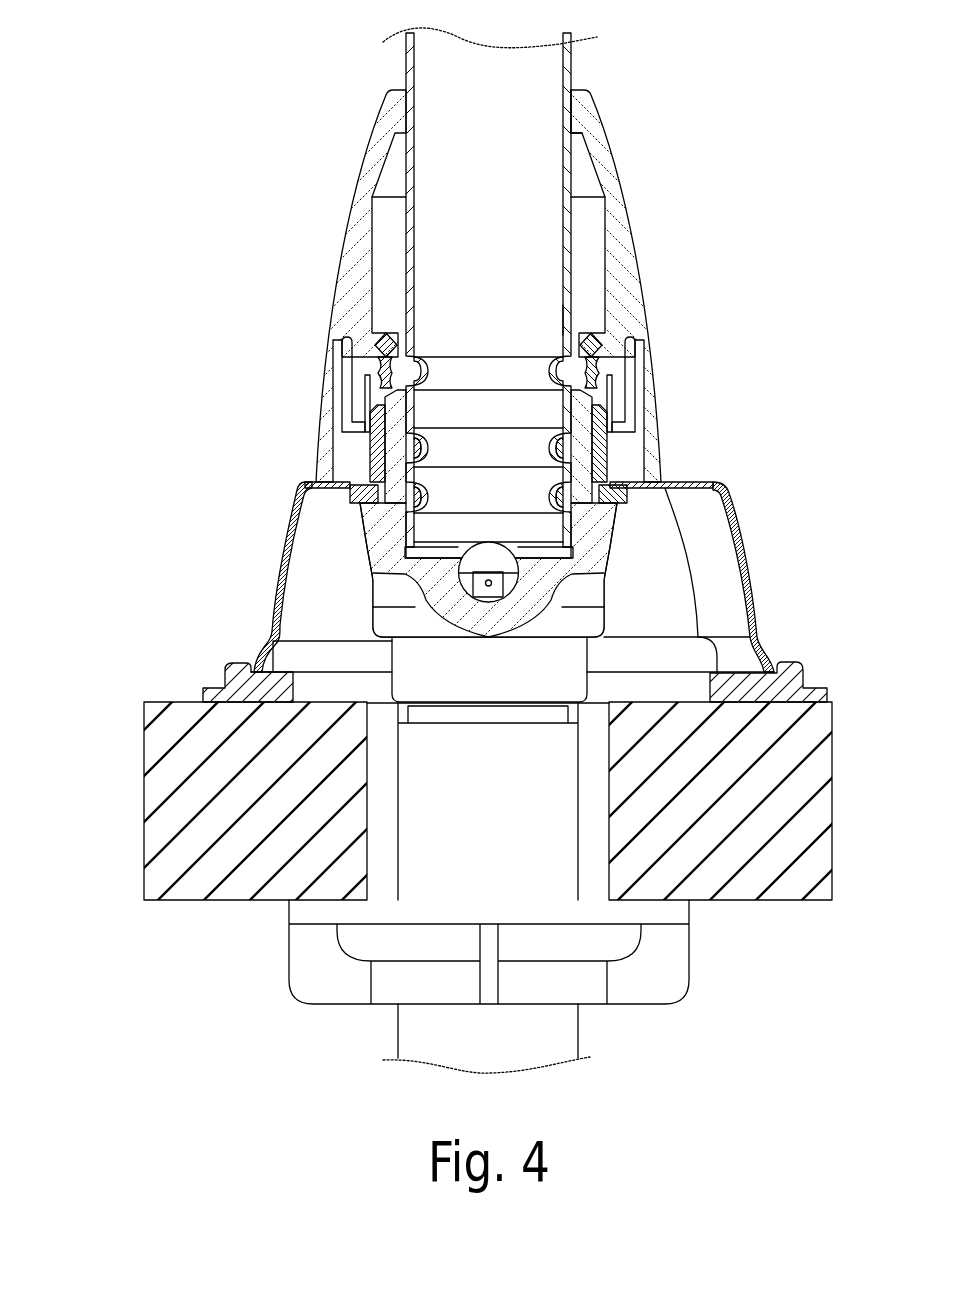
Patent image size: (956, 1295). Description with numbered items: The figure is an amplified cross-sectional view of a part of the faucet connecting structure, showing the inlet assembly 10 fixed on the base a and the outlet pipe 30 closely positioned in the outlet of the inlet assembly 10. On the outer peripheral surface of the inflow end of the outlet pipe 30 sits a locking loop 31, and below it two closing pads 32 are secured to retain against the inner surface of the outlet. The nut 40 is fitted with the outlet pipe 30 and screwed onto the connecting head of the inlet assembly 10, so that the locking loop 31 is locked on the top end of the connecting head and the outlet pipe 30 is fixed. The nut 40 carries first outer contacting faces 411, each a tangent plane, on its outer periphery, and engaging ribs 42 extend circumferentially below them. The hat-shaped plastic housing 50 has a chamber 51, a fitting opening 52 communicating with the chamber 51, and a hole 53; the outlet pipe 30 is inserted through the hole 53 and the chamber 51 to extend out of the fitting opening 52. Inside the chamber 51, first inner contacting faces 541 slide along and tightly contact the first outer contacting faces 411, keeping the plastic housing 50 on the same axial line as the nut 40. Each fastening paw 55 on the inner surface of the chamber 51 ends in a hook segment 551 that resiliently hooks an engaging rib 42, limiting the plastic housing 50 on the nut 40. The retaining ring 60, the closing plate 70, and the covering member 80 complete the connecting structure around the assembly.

The inlet assembly 10 is at (350, 548).
The outlet pipe 30 is at (385, 60).
The locking loop 31 is at (575, 322).
The closing pads 32 is at (565, 500).
The nut 40 is at (356, 467).
The first outer contacting faces 411 is at (363, 357).
The engaging rib 42 is at (360, 403).
The plastic housing 50 is at (345, 150).
The chamber 51 is at (588, 237).
The fitting opening 52 is at (570, 117).
The hole 53 is at (637, 473).
The first inner contacting faces 541 is at (390, 330).
The fastening paw 55 is at (362, 422).
The hook segment 551 is at (360, 440).
The retaining ring 60 is at (303, 497).
The closing plate 70 is at (206, 660).
The covering member 80 is at (258, 609).
The base a is at (166, 820).